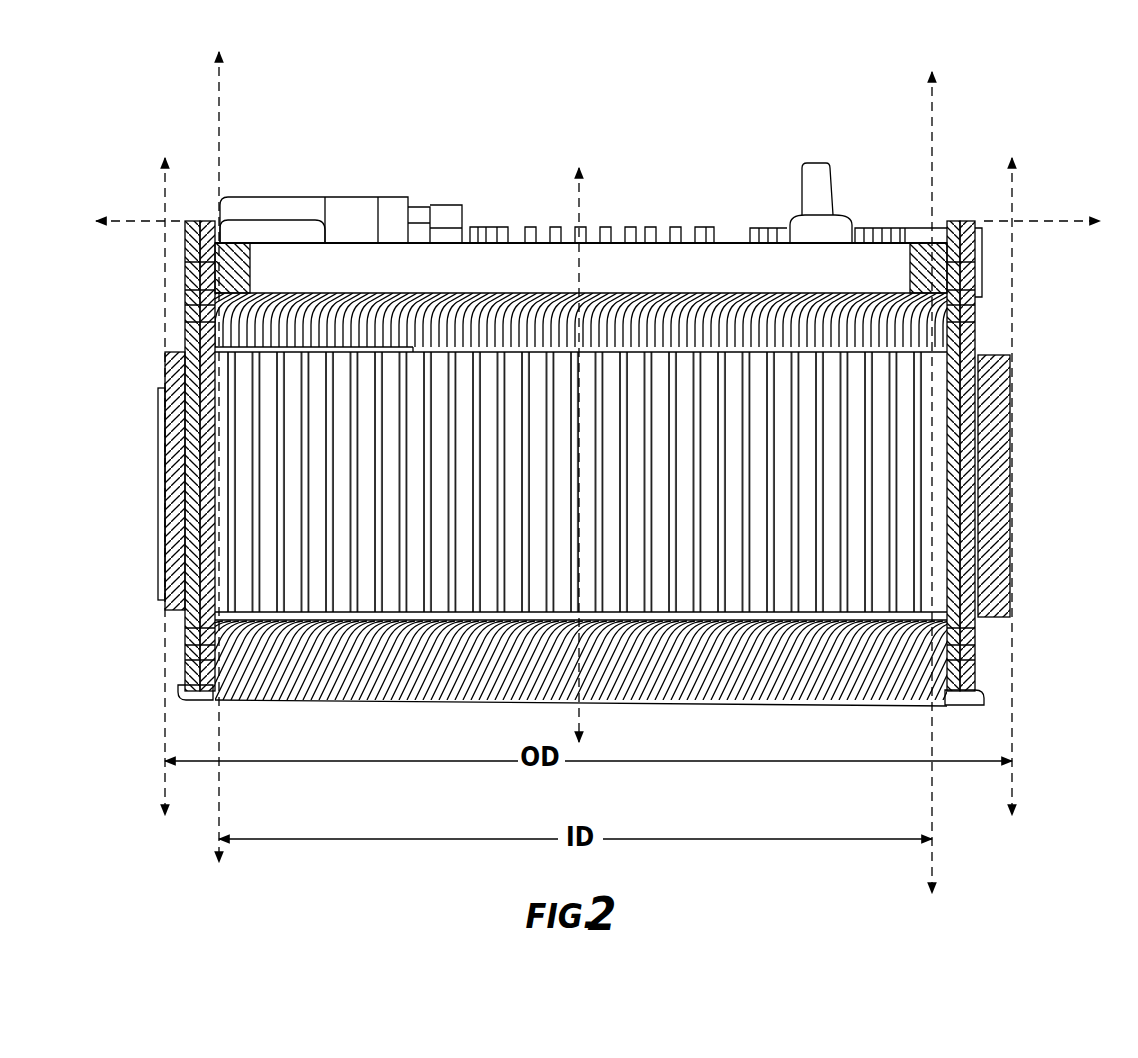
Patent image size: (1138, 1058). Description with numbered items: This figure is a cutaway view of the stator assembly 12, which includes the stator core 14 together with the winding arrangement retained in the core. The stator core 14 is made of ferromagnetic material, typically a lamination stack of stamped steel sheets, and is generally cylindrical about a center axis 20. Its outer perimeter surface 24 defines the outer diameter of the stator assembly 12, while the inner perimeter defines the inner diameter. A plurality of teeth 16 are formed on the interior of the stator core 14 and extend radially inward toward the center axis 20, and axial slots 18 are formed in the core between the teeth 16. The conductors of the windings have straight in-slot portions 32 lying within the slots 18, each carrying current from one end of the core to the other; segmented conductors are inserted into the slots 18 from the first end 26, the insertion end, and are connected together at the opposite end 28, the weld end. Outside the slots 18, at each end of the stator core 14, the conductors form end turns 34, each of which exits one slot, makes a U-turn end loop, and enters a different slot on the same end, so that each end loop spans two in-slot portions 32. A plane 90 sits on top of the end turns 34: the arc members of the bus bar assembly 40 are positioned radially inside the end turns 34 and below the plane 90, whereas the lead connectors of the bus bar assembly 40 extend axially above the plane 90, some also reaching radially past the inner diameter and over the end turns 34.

The stator assembly 12 is at (1022, 92).
The stator core 14 is at (866, 463).
The teeth 16 is at (542, 552).
The axial slots 18 is at (650, 558).
The in-slot portions 32 is at (672, 550).
The center axis 20 is at (577, 207).
The outer perimeter surface 24 is at (1010, 600).
The first end 26 is at (942, 560).
The opposite end 28 is at (512, 212).
The end turns 34 is at (699, 232).
The bus bar assembly 40 is at (592, 258).
The plane 90 is at (1047, 228).